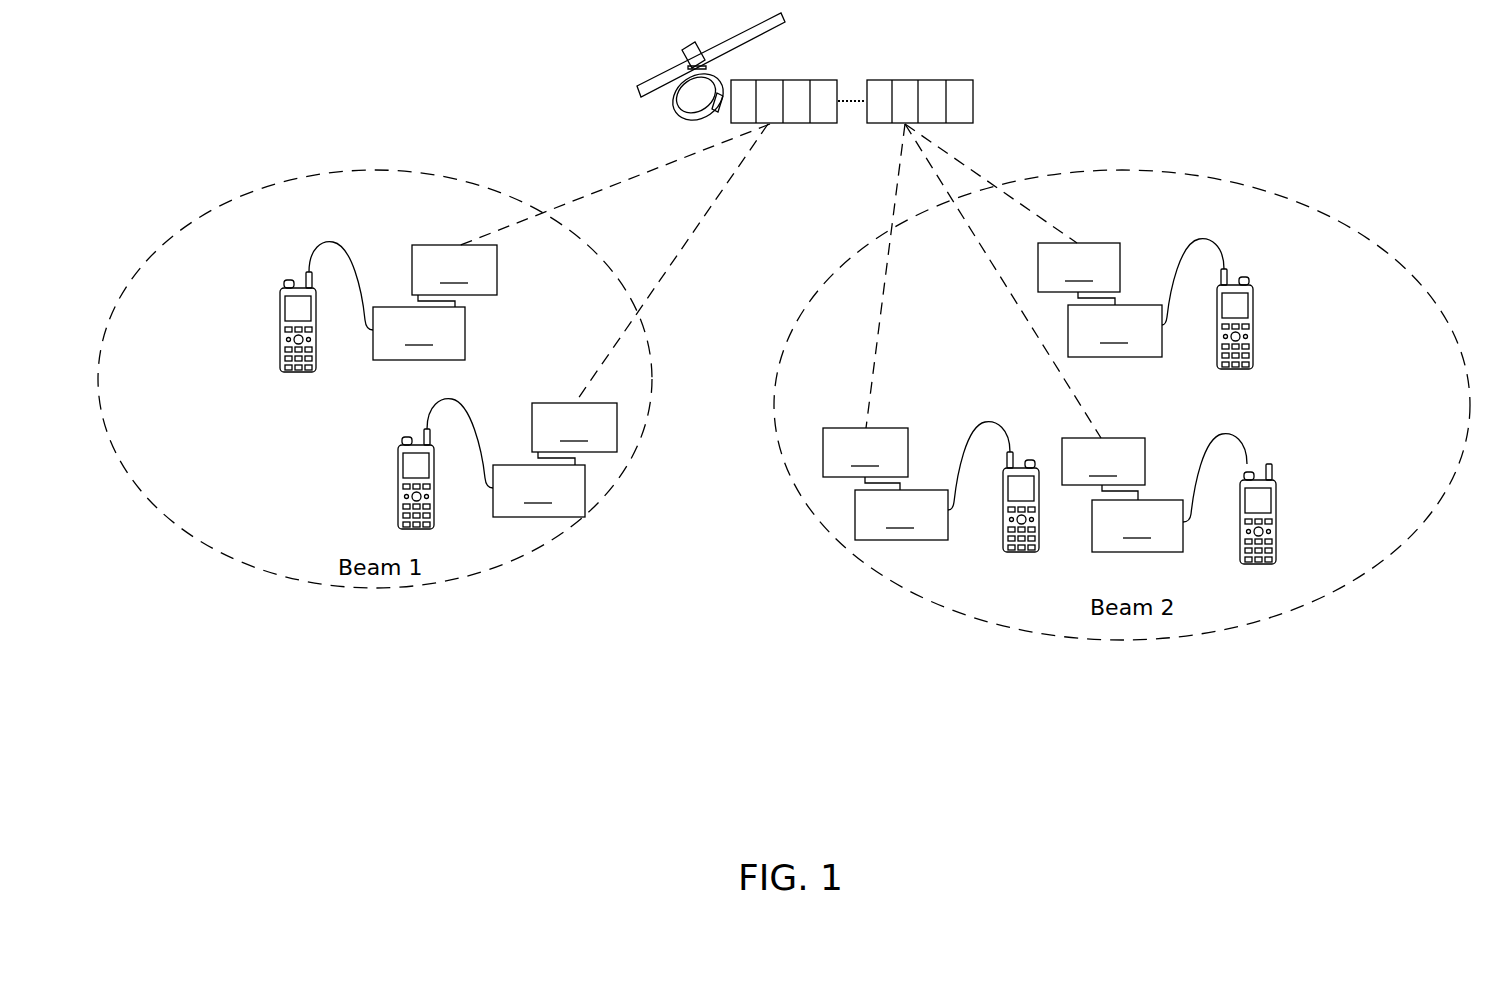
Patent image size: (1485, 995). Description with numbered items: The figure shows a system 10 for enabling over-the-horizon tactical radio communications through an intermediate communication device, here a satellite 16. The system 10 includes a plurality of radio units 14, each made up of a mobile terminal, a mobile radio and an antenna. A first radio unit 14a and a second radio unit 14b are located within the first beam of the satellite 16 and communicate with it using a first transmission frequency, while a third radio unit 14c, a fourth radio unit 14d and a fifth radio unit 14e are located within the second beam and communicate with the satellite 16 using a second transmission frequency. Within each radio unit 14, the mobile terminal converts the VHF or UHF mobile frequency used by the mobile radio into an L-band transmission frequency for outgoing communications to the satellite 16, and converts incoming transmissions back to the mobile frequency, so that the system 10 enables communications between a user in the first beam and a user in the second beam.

The system 10 is at (322, 116).
The radio unit 14 is at (786, 409).
The first radio unit 14a is at (266, 301).
The second radio unit 14b is at (390, 452).
The third radio unit 14c is at (1322, 272).
The fourth radio unit 14d is at (1340, 458).
The fifth radio unit 14e is at (1030, 448).
The satellite 16 is at (657, 62).